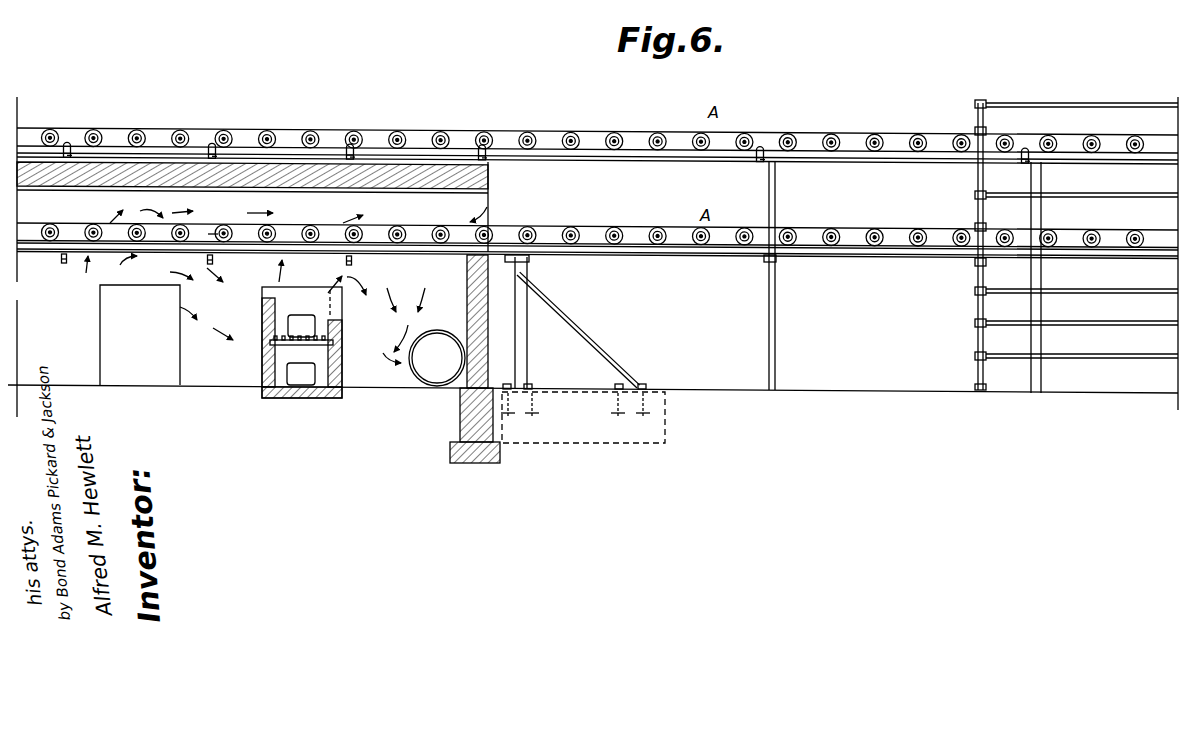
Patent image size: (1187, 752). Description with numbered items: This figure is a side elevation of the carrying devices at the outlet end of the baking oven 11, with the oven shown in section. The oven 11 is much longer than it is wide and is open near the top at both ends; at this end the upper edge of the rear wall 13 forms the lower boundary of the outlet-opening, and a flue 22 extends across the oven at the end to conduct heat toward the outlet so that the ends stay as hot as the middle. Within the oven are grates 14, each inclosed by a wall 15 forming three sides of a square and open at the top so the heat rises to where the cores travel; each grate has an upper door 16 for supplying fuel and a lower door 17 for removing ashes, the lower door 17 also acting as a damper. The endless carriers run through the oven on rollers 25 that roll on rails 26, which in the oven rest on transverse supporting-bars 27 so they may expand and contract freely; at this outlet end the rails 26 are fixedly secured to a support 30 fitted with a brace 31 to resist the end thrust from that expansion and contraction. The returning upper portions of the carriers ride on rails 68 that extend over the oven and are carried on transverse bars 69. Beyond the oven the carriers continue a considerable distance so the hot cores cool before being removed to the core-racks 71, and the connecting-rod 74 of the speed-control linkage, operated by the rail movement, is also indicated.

The transverse bars 69 is at (62, 156).
The rails 68 is at (845, 160).
The connecting-rod 74 is at (935, 152).
The core-racks 71 is at (1062, 104).
The rollers 25 is at (833, 233).
The rails 26 is at (866, 250).
The oven 11 is at (252, 207).
The transverse supporting-bars 27 is at (63, 258).
The wall 15 is at (342, 330).
The grates 14 is at (283, 343).
The upper door 16 is at (301, 326).
The lower door 17 is at (301, 374).
The rear wall 13 is at (469, 292).
The flue 22 is at (437, 358).
The support 30 is at (523, 350).
The brace 31 is at (577, 330).